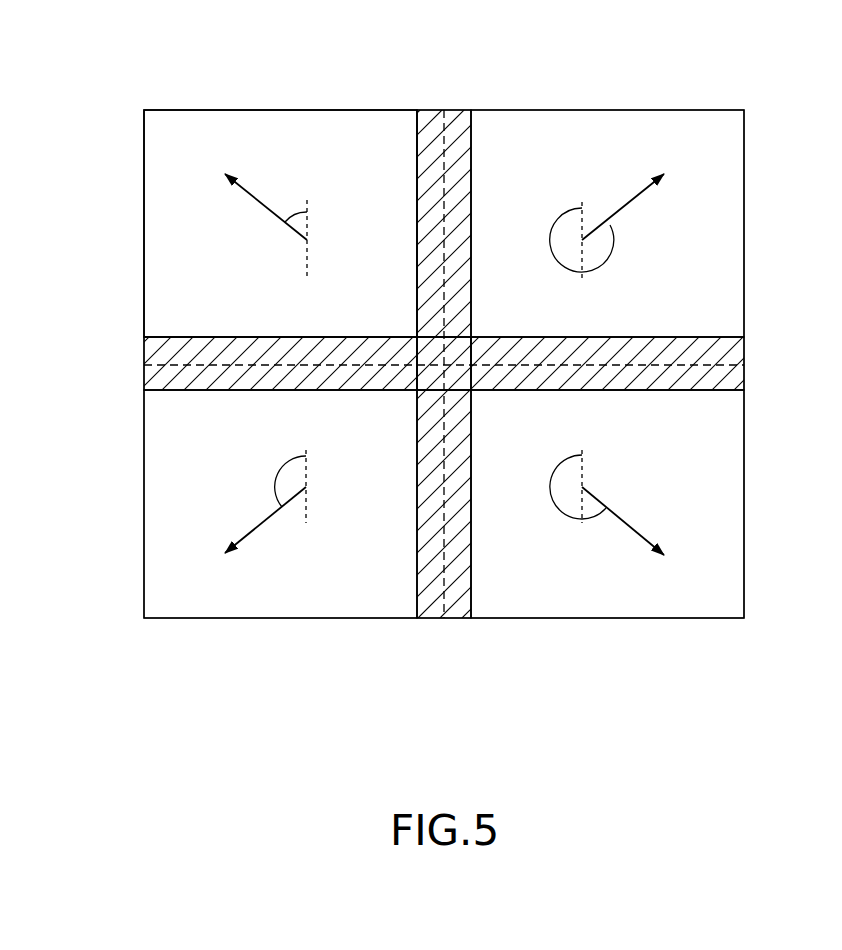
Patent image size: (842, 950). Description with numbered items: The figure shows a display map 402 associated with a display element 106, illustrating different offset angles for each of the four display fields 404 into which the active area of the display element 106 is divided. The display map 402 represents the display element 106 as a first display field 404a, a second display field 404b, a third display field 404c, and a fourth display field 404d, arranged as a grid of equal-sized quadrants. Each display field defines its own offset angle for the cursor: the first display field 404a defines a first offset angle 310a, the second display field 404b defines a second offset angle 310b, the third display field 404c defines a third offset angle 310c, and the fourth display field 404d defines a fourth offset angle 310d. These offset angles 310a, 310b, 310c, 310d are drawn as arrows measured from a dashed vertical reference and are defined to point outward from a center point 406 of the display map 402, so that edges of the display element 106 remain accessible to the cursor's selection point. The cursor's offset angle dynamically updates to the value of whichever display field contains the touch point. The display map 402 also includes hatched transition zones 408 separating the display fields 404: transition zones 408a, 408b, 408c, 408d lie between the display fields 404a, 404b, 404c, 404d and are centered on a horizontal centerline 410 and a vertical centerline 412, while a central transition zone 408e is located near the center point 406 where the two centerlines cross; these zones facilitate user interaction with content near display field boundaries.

The display element 106 is at (118, 52).
The display map 402 is at (144, 125).
The display fields 404 is at (155, 262).
The first display field 404a is at (306, 147).
The second display field 404b is at (634, 147).
The third display field 404c is at (305, 597).
The fourth display field 404d is at (634, 597).
The center point 406 is at (443, 360).
The transition zones 408 is at (456, 612).
The transition zone 408a is at (430, 120).
The transition zone 408b is at (727, 352).
The transition zone 408c is at (432, 612).
The transition zone 408d is at (152, 374).
The central transition zone 408e is at (457, 340).
The horizontal centerline 410 is at (710, 366).
The vertical centerline 412 is at (446, 148).
The first offset angle 310a is at (292, 213).
The second offset angle 310b is at (567, 210).
The third offset angle 310c is at (275, 475).
The fourth offset angle 310d is at (572, 518).